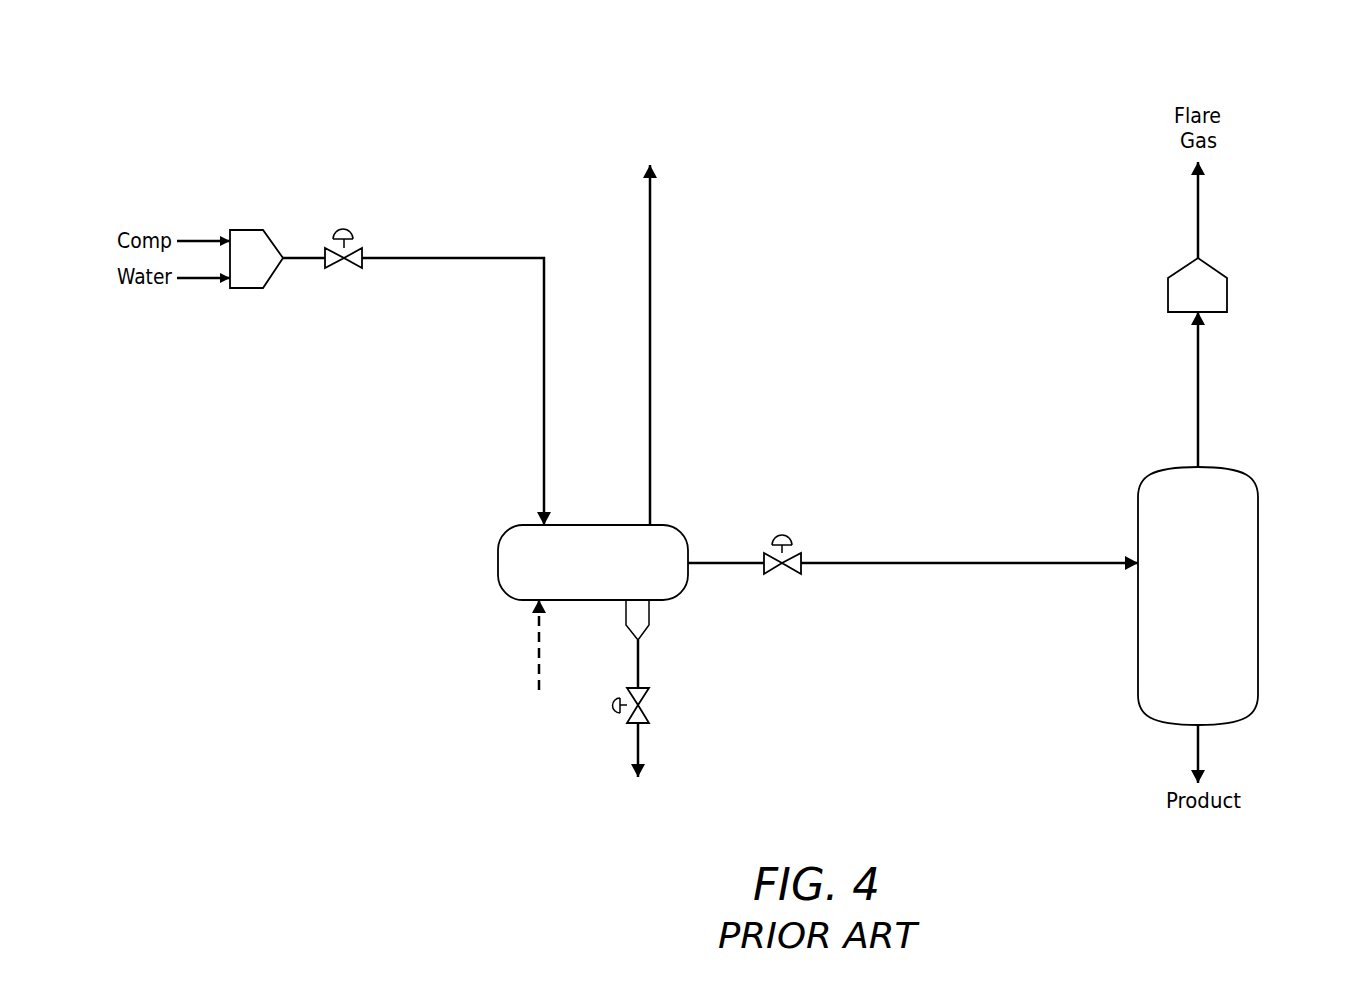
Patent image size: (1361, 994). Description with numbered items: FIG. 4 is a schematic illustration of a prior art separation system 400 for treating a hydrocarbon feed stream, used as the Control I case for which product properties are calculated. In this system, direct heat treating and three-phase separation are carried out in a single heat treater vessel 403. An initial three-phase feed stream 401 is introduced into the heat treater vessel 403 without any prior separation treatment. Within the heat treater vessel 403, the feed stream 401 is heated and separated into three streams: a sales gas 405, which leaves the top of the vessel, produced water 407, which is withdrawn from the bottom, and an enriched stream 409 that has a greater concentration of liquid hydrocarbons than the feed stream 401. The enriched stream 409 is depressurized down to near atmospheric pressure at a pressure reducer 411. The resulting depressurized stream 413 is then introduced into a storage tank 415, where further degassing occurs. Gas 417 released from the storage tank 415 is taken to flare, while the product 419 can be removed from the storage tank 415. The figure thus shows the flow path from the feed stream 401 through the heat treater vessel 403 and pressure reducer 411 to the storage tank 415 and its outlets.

The separation system 400 is at (1166, 63).
The feed stream 401 is at (444, 255).
The heat treater vessel 403 is at (497, 562).
The sales gas 405 is at (651, 316).
The produced water 407 is at (640, 663).
The enriched stream 409 is at (734, 560).
The pressure reducer 411 is at (790, 574).
The depressurized stream 413 is at (978, 562).
The storage tank 415 is at (1258, 610).
The gas 417 is at (1198, 388).
The product 419 is at (1198, 752).